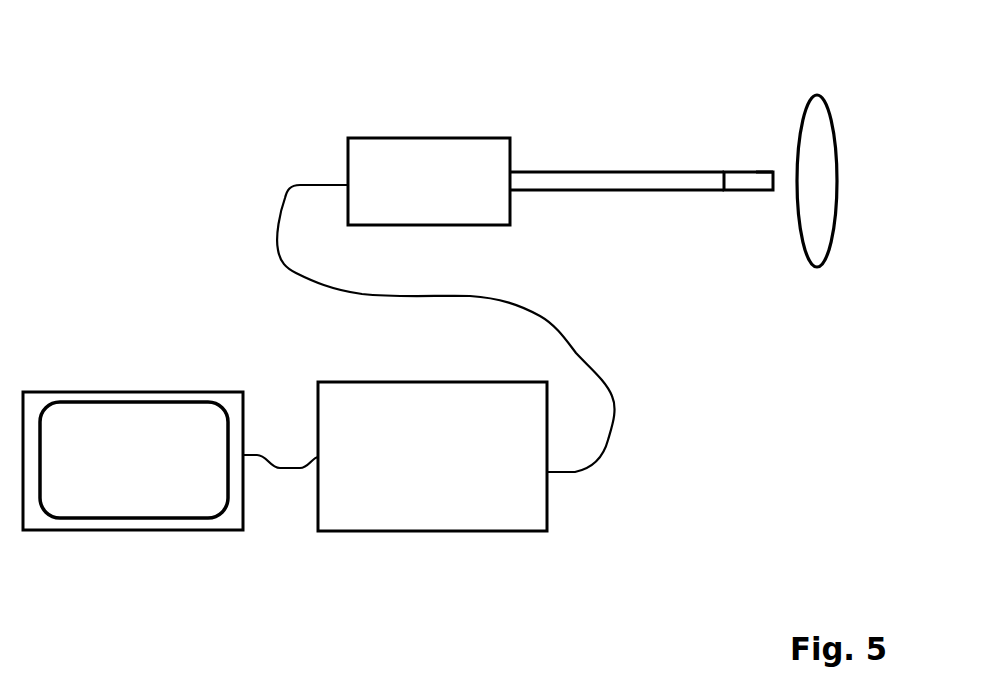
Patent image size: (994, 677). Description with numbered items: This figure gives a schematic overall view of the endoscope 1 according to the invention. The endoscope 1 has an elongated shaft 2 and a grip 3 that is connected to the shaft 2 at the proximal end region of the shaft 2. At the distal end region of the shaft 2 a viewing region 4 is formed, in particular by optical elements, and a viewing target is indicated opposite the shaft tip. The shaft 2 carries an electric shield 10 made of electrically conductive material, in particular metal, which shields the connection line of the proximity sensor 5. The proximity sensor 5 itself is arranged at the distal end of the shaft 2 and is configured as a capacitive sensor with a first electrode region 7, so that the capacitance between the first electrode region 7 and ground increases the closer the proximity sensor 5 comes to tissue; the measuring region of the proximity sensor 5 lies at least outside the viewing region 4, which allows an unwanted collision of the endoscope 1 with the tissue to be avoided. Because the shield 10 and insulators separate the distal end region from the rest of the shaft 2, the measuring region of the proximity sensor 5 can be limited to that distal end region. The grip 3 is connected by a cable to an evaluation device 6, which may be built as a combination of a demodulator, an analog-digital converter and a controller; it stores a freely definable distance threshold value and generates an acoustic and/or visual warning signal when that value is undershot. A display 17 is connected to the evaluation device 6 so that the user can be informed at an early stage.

The endoscope 1 is at (627, 101).
The shaft 2 is at (643, 182).
The grip 3 is at (370, 153).
The viewing region 4 is at (823, 195).
The proximity sensor 5 is at (746, 178).
The evaluation device 6 is at (523, 507).
The first electrode region 7 is at (762, 171).
The shield 10 is at (575, 182).
The display 17 is at (135, 423).